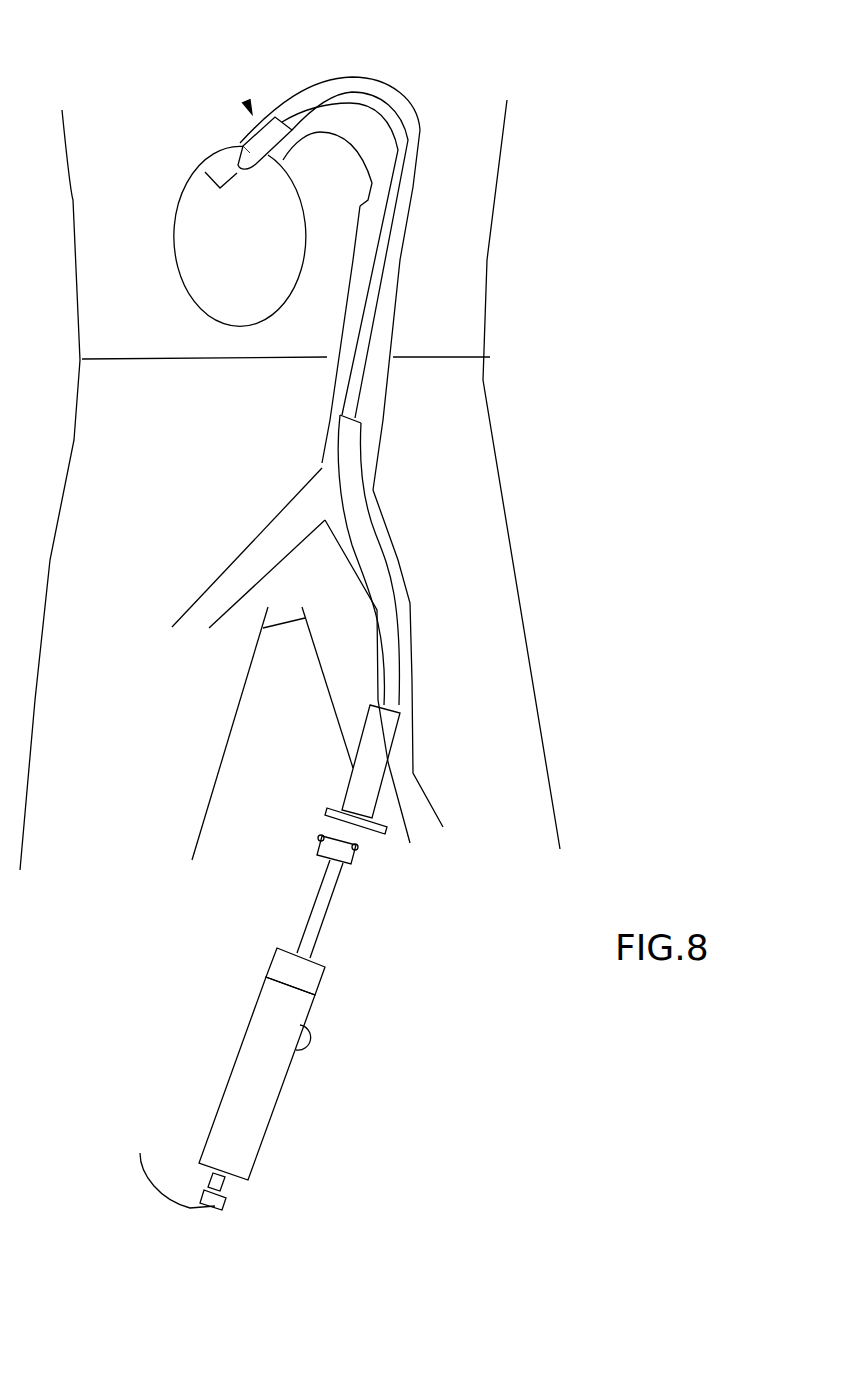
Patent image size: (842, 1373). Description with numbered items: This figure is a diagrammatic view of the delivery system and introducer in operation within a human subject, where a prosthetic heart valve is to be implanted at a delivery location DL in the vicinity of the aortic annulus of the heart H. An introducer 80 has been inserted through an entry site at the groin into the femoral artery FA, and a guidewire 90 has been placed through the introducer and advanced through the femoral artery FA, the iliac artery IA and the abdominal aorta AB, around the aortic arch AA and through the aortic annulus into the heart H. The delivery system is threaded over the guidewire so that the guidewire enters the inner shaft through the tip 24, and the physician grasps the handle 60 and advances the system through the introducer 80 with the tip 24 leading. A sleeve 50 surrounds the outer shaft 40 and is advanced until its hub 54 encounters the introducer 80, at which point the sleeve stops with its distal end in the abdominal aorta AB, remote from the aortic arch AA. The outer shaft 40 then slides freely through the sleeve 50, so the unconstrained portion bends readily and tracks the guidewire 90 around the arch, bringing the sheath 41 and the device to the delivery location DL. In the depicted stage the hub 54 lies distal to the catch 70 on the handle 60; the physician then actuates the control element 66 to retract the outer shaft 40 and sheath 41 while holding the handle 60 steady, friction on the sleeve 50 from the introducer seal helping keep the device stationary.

The heart H is at (180, 200).
The aortic arch AA is at (400, 93).
The abdominal aorta AB is at (390, 378).
The iliac artery IA is at (395, 548).
The femoral artery FA is at (410, 687).
The delivery location DL is at (247, 107).
The tip 24 is at (233, 143).
The outer shaft 40 is at (380, 253).
The sheath 41 is at (270, 140).
The sleeve 50 is at (400, 612).
The hub 54 is at (362, 843).
The handle 60 is at (253, 1087).
The control element 66 is at (310, 1042).
The catch 70 is at (315, 978).
The introducer 80 is at (387, 762).
The guidewire 90 is at (193, 160).